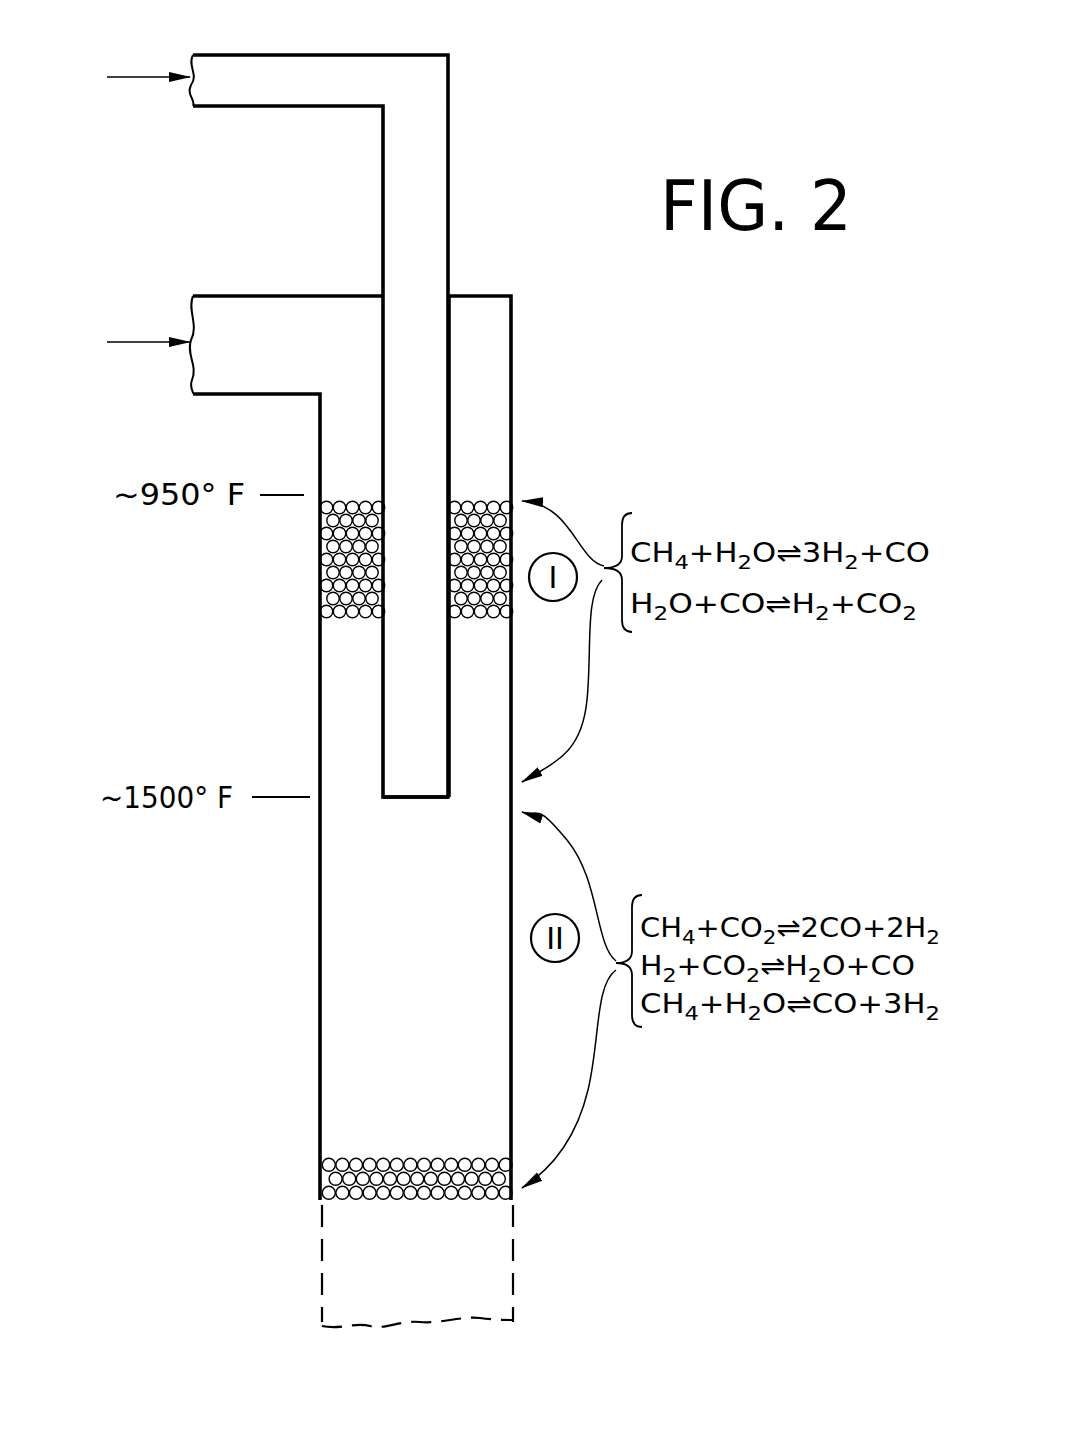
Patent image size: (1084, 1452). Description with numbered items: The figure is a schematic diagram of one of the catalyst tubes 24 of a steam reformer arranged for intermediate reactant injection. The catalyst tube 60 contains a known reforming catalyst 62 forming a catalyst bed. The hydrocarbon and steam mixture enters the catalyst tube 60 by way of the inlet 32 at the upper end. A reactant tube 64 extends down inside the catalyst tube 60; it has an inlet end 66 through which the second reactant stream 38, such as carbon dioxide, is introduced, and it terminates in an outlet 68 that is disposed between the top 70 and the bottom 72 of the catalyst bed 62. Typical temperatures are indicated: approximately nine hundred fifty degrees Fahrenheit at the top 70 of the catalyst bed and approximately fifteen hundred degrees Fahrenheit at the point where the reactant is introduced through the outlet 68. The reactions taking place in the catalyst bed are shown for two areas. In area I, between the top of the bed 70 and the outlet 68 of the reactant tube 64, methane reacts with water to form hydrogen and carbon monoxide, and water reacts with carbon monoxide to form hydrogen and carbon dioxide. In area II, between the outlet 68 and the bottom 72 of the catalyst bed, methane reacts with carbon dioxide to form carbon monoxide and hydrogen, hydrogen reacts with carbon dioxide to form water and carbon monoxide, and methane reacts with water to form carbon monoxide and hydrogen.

The catalyst tubes 24 is at (250, 295).
The inlet 32 is at (131, 342).
The second reactant stream 38 is at (145, 77).
The catalyst tube 60 is at (514, 381).
The reforming catalyst 62 is at (483, 877).
The reactant tube 64 is at (455, 208).
The inlet end 66 is at (191, 101).
The outlet 68 is at (413, 796).
The top of the catalyst bed 70 is at (487, 500).
The bottom of the catalyst bed 72 is at (423, 1200).